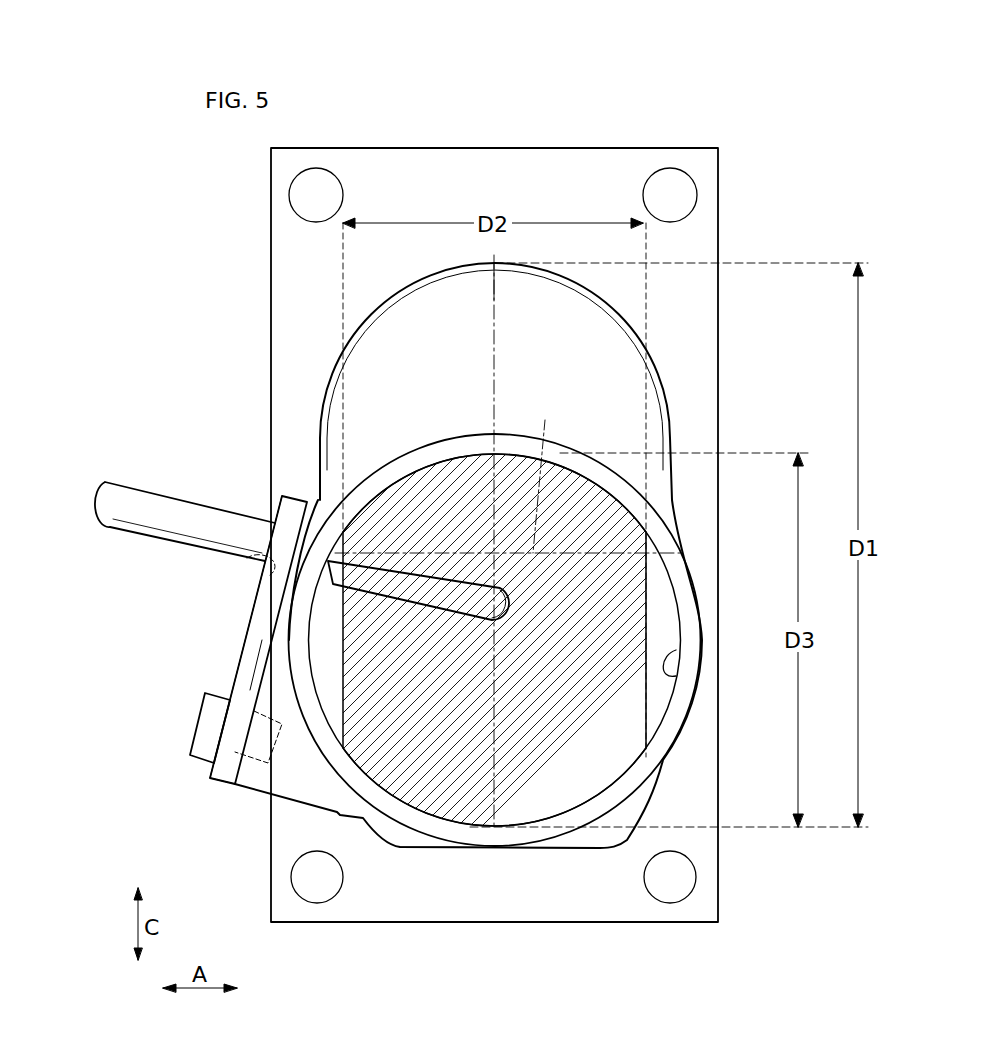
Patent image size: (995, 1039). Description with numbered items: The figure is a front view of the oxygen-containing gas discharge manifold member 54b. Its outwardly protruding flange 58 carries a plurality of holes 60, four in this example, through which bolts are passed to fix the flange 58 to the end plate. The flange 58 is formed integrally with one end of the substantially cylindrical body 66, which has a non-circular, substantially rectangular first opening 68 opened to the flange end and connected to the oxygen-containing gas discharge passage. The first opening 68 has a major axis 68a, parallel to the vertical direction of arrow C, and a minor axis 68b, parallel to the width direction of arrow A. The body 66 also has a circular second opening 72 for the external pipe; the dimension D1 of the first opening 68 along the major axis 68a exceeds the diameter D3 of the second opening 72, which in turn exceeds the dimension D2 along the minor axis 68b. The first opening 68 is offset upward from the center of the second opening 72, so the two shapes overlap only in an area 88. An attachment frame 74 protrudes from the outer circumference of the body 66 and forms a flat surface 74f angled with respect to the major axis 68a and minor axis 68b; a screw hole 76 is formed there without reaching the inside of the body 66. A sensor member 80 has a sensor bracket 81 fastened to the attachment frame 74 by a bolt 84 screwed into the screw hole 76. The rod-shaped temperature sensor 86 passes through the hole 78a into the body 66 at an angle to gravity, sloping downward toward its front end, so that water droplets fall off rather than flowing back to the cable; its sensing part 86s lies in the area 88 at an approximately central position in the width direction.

The oxygen-containing gas discharge manifold member 54b is at (706, 122).
The flange 58 is at (285, 320).
The holes 60 is at (327, 207).
The body 66 is at (622, 477).
The first opening 68 is at (360, 703).
The major axis 68a is at (492, 370).
The minor axis 68b is at (555, 471).
The second opening 72 is at (680, 640).
The attachment frame 74 is at (262, 780).
The flat surface 74f is at (263, 627).
The screw hole 76 is at (227, 763).
The rod hole of lever plate 78a is at (247, 558).
The sensor member 80 is at (237, 660).
The sensor bracket 81 is at (247, 677).
The bolt 84 is at (200, 738).
The temperature sensor 86 is at (430, 577).
The sensing part 86s is at (522, 600).
The area 88 is at (468, 847).